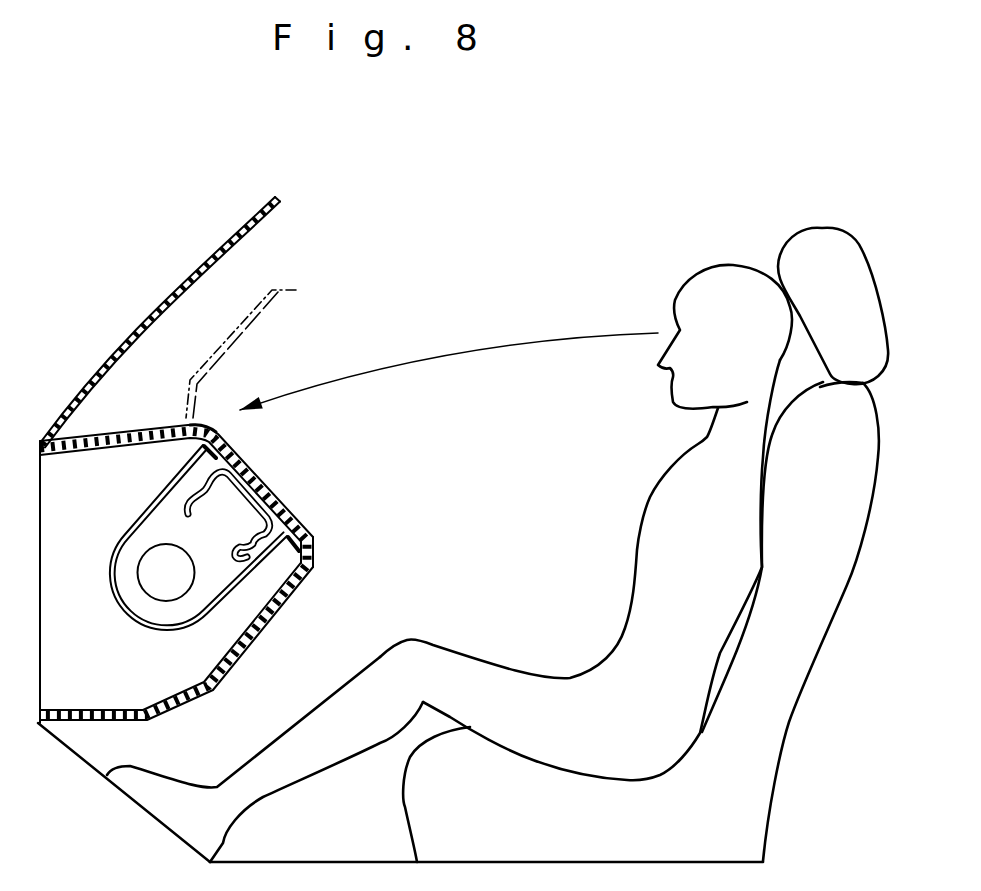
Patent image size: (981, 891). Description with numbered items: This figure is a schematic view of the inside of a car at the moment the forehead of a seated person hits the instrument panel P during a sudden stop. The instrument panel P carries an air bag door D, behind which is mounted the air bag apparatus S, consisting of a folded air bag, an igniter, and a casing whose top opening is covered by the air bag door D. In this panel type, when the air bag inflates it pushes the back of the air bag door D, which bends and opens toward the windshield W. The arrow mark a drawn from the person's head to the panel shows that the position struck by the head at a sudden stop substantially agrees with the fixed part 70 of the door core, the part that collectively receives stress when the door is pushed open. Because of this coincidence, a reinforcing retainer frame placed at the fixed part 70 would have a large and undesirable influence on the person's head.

The windshield W is at (227, 233).
The air bag door D is at (267, 293).
The instrument panel P is at (320, 550).
The fixed part 70 is at (204, 427).
The arrow mark a is at (449, 358).
The air bag apparatus S is at (158, 506).